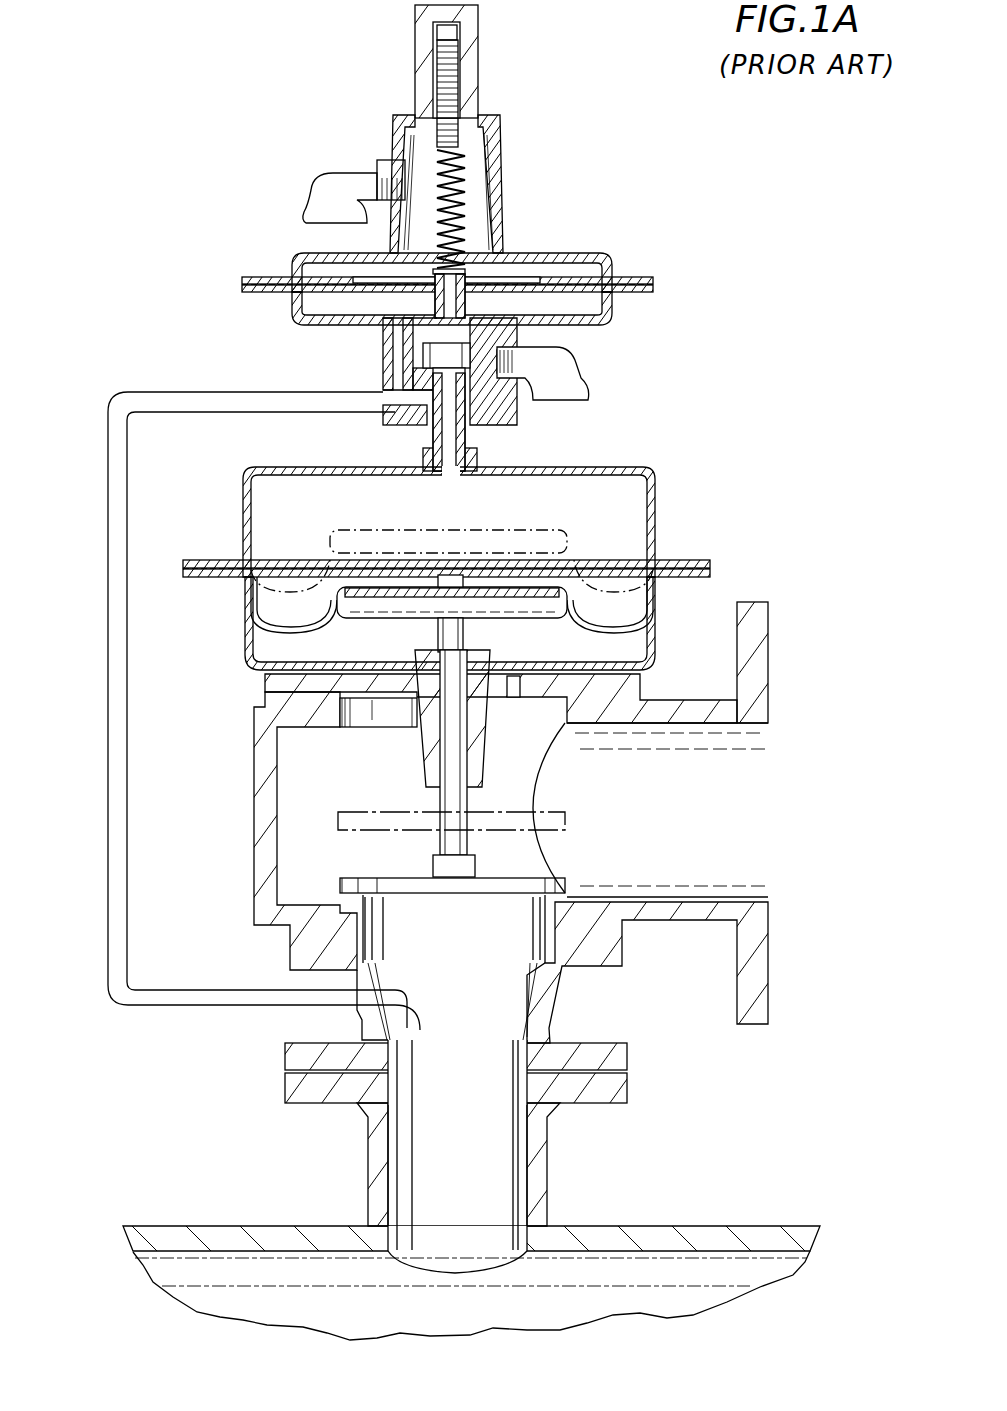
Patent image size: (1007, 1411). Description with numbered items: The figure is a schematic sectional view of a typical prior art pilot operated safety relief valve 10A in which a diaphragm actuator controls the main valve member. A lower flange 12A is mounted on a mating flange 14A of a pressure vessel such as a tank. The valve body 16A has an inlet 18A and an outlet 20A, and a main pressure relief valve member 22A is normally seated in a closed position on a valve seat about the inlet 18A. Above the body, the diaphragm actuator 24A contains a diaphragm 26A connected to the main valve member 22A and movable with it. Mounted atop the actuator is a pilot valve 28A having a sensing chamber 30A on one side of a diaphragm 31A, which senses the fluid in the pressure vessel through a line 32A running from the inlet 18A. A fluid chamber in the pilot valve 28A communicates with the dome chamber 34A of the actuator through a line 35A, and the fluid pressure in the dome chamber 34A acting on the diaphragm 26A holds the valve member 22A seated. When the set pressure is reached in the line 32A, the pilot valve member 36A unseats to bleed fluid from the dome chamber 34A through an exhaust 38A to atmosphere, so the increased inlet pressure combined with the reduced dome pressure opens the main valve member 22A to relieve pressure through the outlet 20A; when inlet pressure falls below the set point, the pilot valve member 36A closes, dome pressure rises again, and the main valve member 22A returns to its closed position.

The pilot operated safety relief valve 10A is at (792, 622).
The lower flange 12A is at (617, 1051).
The mating flange 14A is at (620, 1088).
The valve body 16A is at (253, 884).
The inlet 18A is at (420, 1050).
The outlet 20A is at (749, 779).
The main pressure relief valve member 22A is at (565, 818).
The diaphragm actuator 24A is at (635, 461).
The diaphragm 26A is at (300, 525).
The pilot valve 28A is at (523, 215).
The sensing chamber 30A is at (578, 302).
The diaphragm 31A is at (295, 254).
The line 32A is at (108, 694).
The dome chamber 34A is at (277, 490).
The line 35A is at (465, 430).
The pilot valve member 36A is at (447, 318).
The exhaust 38A is at (562, 363).